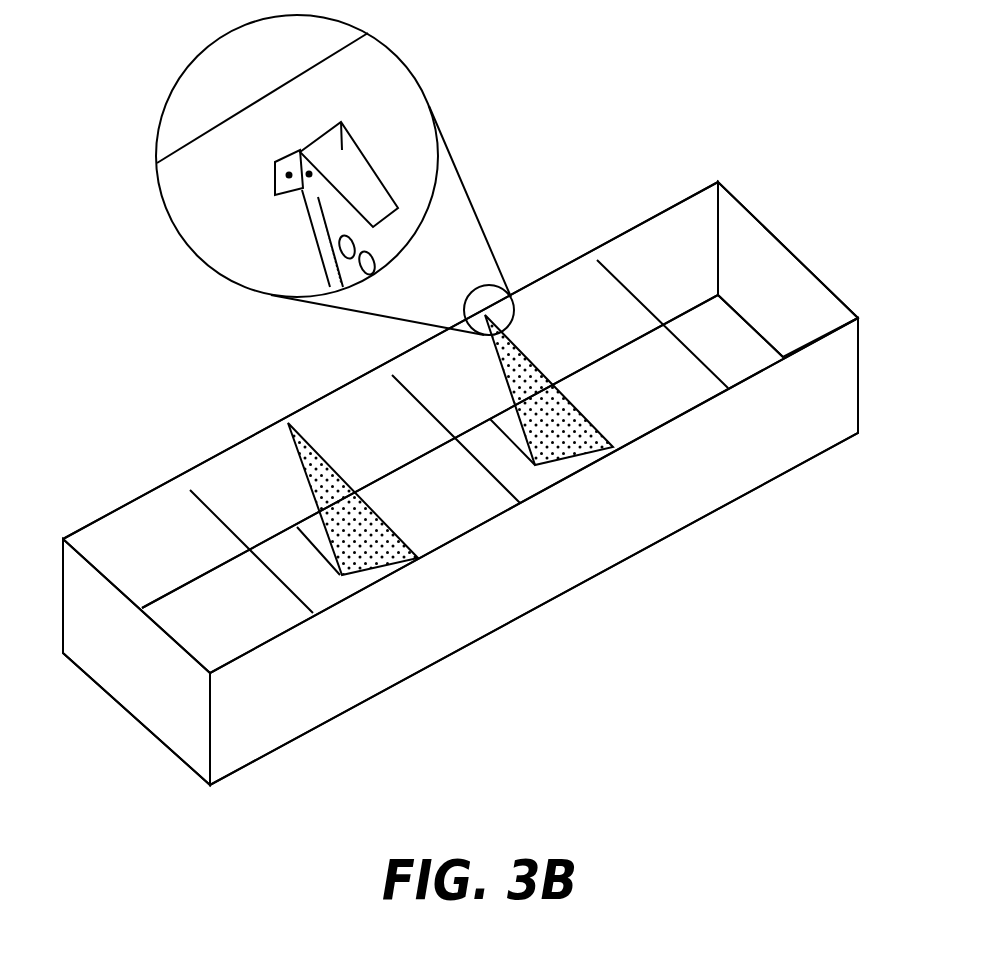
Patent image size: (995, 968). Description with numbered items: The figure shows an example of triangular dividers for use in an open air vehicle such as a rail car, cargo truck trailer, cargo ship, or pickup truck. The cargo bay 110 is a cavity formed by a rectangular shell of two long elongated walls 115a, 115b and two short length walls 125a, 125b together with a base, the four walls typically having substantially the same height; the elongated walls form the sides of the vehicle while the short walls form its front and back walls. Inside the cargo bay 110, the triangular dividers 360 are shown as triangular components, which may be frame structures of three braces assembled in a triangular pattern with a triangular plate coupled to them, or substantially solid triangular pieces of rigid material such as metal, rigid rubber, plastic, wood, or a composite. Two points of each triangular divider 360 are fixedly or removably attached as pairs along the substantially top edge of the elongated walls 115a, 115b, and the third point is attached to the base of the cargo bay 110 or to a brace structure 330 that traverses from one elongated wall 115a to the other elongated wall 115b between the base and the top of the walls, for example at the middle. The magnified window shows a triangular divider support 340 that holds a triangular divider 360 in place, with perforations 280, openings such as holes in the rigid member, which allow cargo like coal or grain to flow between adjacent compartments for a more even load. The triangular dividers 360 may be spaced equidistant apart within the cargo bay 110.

The cargo bay 110 is at (373, 698).
The elongated wall 115a is at (765, 468).
The elongated wall 115b is at (648, 230).
The short length wall 125a is at (763, 250).
The short length wall 125b is at (135, 692).
The perforations 280 is at (372, 257).
The brace structure 330 is at (309, 480).
The triangular divider support 340 is at (355, 155).
The triangular dividers 360 is at (550, 433).